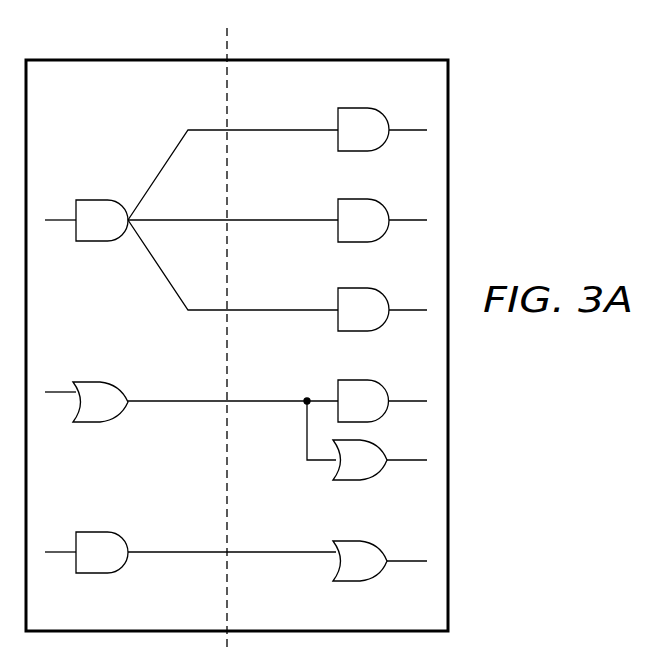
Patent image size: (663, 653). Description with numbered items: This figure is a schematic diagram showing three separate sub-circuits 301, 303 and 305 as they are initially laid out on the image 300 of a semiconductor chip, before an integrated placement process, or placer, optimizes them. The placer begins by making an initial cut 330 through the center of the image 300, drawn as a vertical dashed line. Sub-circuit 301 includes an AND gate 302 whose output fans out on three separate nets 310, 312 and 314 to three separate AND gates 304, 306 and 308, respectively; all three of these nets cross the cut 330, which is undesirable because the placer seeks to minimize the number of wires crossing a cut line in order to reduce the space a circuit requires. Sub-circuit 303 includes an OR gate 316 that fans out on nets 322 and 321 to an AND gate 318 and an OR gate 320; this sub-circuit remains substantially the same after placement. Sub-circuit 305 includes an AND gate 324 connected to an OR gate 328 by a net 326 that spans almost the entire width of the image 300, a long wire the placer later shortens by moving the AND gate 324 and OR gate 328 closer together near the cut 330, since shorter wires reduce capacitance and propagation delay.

The image of the semiconductor chip 300 is at (160, 59).
The cut 330 is at (230, 50).
The sub-circuit 301 is at (86, 214).
The AND gate 302 is at (97, 200).
The sub-circuit 303 is at (86, 393).
The AND gate 304 is at (400, 98).
The sub-circuit 305 is at (86, 543).
The AND gate 306 is at (381, 200).
The AND gate 308 is at (381, 290).
The net 310 is at (287, 128).
The net 312 is at (287, 218).
The net 314 is at (287, 308).
The OR gate 316 is at (92, 381).
The AND gate 318 is at (381, 380).
The OR gate 320 is at (376, 480).
The net 321 is at (306, 432).
The net 322 is at (190, 400).
The AND gate 324 is at (96, 531).
The net 326 is at (190, 551).
The OR gate 328 is at (376, 581).